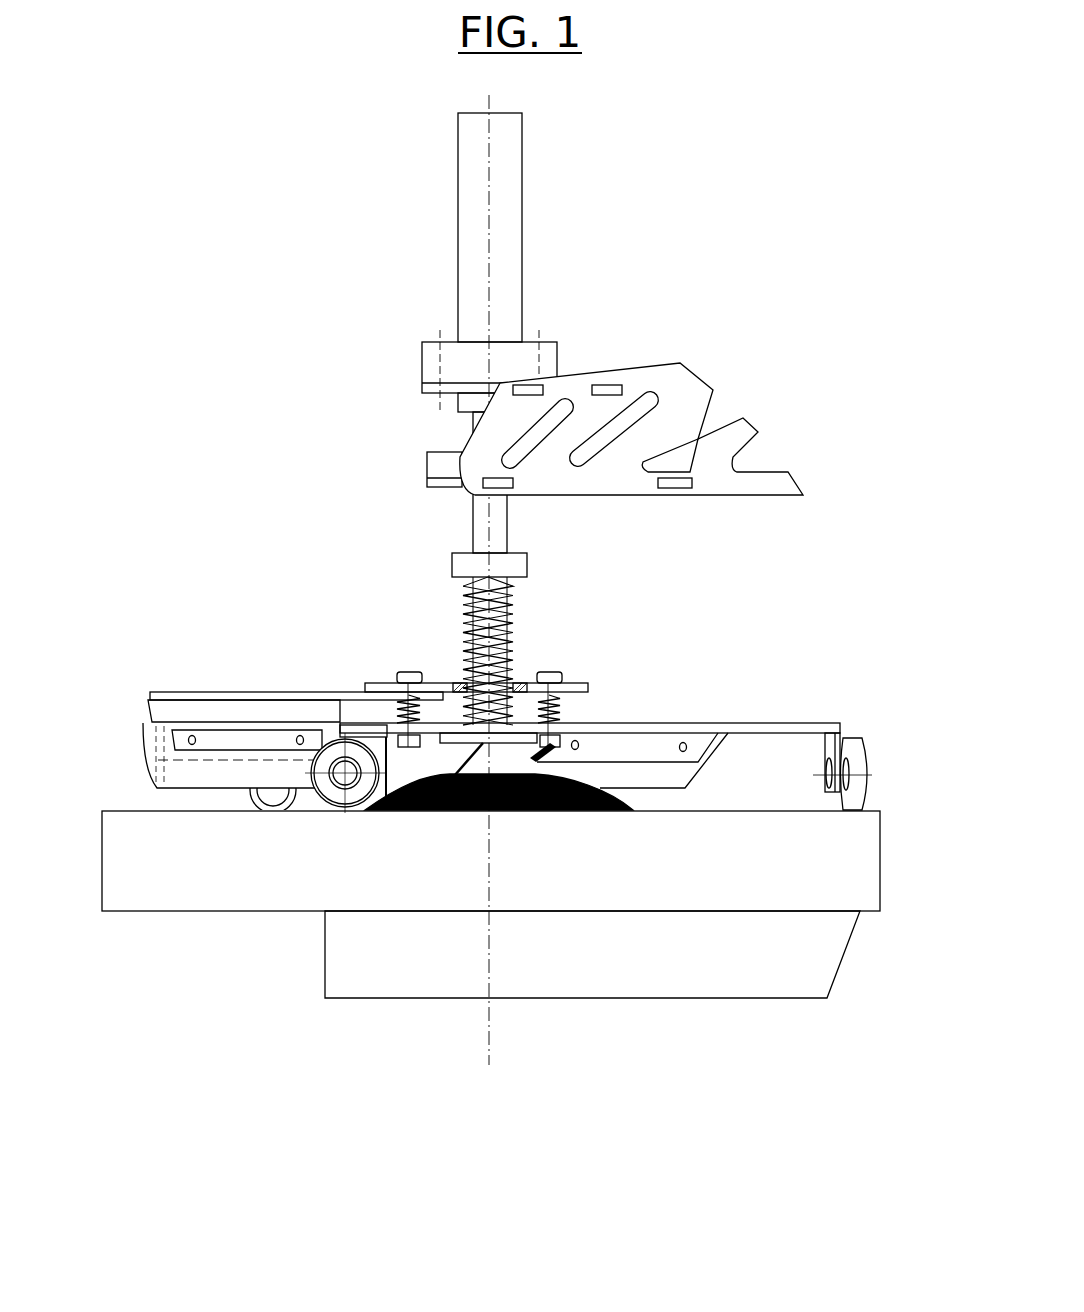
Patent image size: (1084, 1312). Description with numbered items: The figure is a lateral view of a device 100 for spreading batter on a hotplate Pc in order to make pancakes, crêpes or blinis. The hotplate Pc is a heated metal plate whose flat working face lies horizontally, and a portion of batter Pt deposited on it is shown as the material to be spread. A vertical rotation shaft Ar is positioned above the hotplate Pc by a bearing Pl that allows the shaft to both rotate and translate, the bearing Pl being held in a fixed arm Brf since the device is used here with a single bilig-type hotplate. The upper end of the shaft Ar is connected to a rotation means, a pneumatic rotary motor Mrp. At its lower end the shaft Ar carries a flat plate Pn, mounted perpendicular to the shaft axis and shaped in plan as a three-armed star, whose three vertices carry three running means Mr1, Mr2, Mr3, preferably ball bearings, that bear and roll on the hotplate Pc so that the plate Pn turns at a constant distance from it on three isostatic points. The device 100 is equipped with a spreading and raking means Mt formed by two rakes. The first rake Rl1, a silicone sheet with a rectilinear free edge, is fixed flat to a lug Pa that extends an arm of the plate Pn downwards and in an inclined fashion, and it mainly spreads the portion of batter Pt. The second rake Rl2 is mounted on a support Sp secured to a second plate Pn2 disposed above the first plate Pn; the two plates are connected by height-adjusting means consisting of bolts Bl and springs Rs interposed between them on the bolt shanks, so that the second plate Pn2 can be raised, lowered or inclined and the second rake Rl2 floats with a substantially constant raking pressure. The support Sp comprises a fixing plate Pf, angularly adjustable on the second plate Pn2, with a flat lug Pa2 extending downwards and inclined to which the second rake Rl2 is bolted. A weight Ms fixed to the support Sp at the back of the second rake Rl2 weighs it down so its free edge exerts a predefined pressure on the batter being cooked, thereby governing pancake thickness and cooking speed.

The device 100 is at (313, 242).
The pneumatic rotary motor Mrp is at (522, 195).
The fixed arm Brf is at (698, 345).
The bearing Pl is at (427, 468).
The rotation shaft Ar is at (468, 535).
The spreading and raking means Mt is at (276, 668).
The second plate Pn2 is at (375, 687).
The bolt Bl is at (553, 668).
The support Sp is at (312, 695).
The spring Rs is at (557, 710).
The lug Pa is at (600, 745).
The plate Pn is at (665, 714).
The fixing plate Pf is at (183, 693).
The flat lug Pa2 is at (172, 712).
The weight Ms is at (172, 742).
The running means Mr1 is at (283, 807).
The running means Mr2 is at (320, 752).
The running means Mr3 is at (860, 745).
The first rake Rl1 is at (665, 777).
The second rake Rl2 is at (172, 768).
The hotplate Pc is at (215, 883).
The portion of batter Pt is at (450, 811).